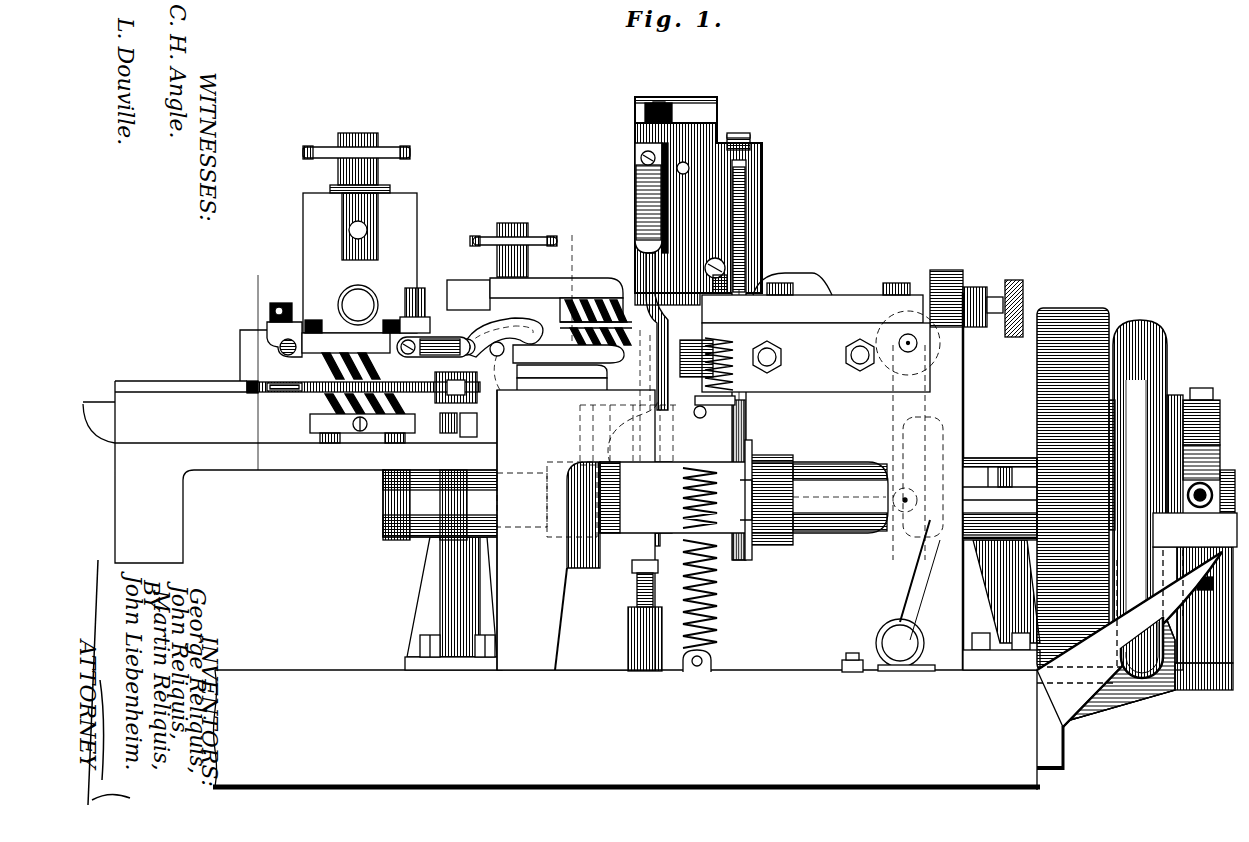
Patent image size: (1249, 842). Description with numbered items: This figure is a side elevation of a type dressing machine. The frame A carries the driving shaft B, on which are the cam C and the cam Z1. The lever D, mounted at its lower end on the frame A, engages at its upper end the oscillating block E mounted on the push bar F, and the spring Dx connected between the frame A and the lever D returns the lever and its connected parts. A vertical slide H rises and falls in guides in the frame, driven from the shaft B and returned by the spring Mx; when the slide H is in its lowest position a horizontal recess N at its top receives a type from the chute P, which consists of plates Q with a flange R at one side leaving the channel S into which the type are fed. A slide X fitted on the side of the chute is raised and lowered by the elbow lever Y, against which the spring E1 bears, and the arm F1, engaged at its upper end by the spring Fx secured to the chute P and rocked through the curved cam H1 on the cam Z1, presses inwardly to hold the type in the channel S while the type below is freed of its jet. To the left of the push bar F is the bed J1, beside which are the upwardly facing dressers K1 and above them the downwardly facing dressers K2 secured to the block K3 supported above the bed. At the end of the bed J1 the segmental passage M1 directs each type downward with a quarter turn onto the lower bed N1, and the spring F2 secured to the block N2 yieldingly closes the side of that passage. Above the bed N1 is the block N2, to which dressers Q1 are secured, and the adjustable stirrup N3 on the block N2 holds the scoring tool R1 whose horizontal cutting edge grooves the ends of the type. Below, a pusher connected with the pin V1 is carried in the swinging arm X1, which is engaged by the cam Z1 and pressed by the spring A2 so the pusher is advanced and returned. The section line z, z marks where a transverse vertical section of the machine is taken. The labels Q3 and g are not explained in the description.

The frame A is at (638, 541).
The spring A2 is at (588, 530).
The driving shaft B is at (848, 528).
The cam C is at (811, 520).
The lever D is at (893, 413).
The spring Dx is at (888, 565).
The oscillating block E is at (940, 343).
The spring E1 is at (707, 365).
The pusher or push bar F is at (845, 305).
The arm F1 is at (639, 331).
The spring F2 is at (488, 318).
The spring Fx is at (635, 210).
The slide H is at (645, 372).
The curved cam H1 is at (633, 615).
The bed J1 is at (583, 299).
The dressers K1 is at (622, 540).
The dressers K2 is at (585, 300).
The block K3 is at (556, 290).
The passage M1 is at (477, 389).
The spring Mx is at (712, 600).
The horizontal recess N is at (473, 243).
The bed N1 is at (275, 478).
The block N2 is at (240, 350).
The stirrup N3 is at (296, 322).
The chute P is at (768, 175).
The plates Q is at (660, 100).
The dressers Q1 is at (318, 366).
The pawls Q3 is at (325, 400).
The flange R is at (633, 123).
The scoring or grooving tool R1 is at (275, 392).
The channel S is at (672, 118).
The pin V1 is at (556, 404).
The slide X is at (740, 130).
The swinging arm X1 is at (513, 337).
The elbow lever Y is at (746, 250).
The cam Z1 is at (577, 566).
The pin g is at (570, 299).
The section line z is at (253, 372).